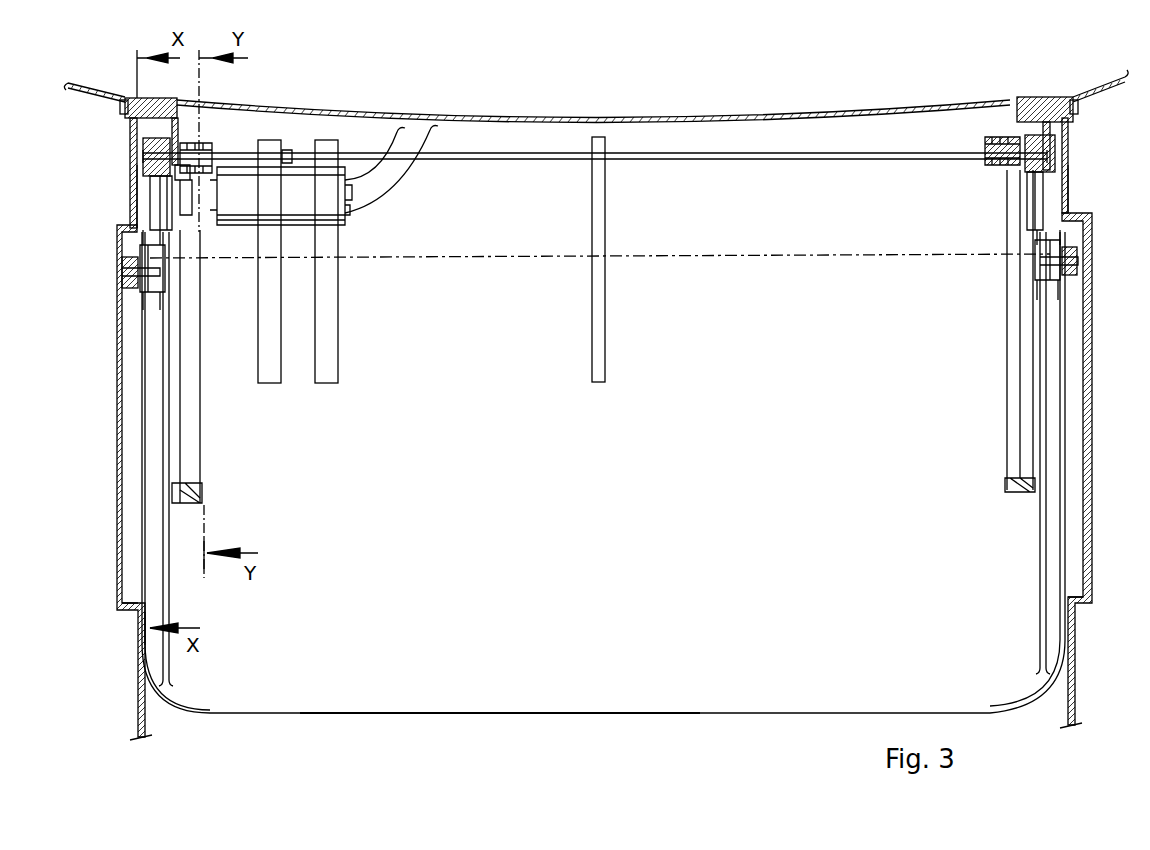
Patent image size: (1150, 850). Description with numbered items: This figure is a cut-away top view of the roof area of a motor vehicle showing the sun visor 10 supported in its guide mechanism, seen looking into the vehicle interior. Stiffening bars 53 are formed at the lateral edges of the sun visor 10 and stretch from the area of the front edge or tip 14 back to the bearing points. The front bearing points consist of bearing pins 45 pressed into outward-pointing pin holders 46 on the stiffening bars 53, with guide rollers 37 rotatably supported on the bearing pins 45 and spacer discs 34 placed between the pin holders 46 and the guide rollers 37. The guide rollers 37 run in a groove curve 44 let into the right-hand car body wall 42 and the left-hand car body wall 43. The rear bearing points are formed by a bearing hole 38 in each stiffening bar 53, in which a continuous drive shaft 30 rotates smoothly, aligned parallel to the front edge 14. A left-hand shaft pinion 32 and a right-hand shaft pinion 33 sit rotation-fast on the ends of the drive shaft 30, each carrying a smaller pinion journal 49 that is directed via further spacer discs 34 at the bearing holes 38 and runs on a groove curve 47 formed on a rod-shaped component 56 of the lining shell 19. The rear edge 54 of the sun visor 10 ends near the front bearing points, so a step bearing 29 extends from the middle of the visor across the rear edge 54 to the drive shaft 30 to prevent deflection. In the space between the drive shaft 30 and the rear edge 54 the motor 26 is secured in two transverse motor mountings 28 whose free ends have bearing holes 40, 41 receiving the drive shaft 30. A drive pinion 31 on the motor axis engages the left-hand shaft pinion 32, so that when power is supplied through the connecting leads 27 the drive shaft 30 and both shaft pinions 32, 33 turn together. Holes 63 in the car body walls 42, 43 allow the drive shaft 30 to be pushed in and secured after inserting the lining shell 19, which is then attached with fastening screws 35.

The sun visor 10 is at (432, 665).
The front edge or tip 14 is at (795, 708).
The lining shell 19 is at (727, 118).
The motor 26 is at (300, 215).
The connecting leads 27 is at (425, 135).
The motor mountings 28 is at (326, 375).
The step bearing 29 is at (600, 205).
The drive shaft 30 is at (730, 160).
The drive pinion 31 is at (158, 228).
The left-hand shaft pinion 32 is at (200, 140).
The right-hand shaft pinion 33 is at (1000, 140).
The spacer discs 34 is at (140, 170).
The fastening screws 35 is at (142, 99).
The guide rollers 37 is at (128, 265).
The bearing hole 38 is at (150, 150).
The bearing hole 40 is at (352, 140).
The bearing hole 41 is at (288, 150).
The right-hand car body wall 42 is at (1090, 460).
The left-hand car body wall 43 is at (120, 468).
The groove curve 44 is at (120, 538).
The bearing pins 45 is at (158, 278).
The pin holders 46 is at (160, 295).
The groove curve 47 is at (178, 430).
The pinion journal 49 is at (160, 183).
The stiffening bars 53 is at (170, 583).
The rear edge 54 is at (822, 255).
The rod-shaped component 56 is at (185, 498).
The holes 63 is at (132, 165).